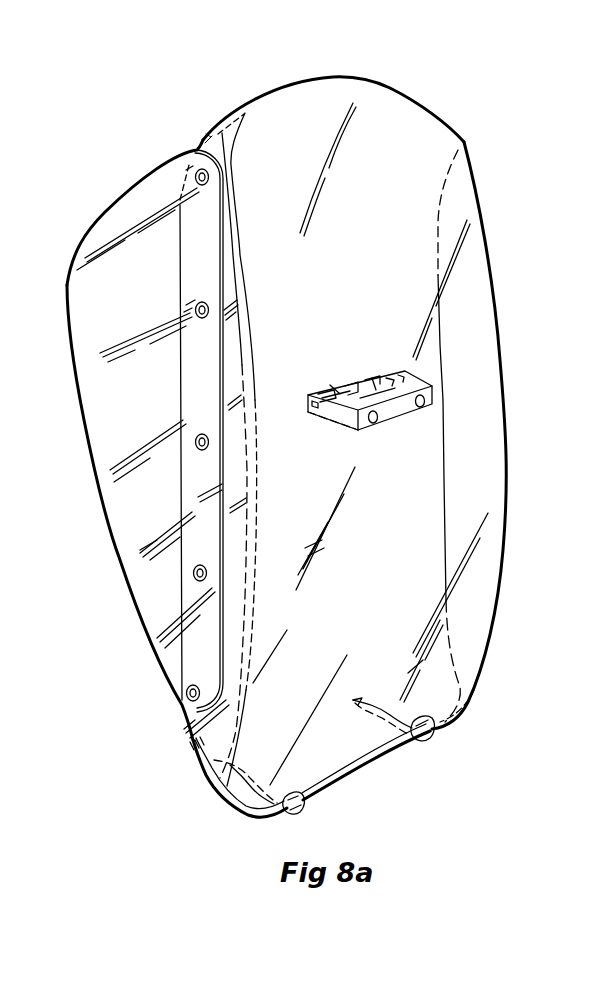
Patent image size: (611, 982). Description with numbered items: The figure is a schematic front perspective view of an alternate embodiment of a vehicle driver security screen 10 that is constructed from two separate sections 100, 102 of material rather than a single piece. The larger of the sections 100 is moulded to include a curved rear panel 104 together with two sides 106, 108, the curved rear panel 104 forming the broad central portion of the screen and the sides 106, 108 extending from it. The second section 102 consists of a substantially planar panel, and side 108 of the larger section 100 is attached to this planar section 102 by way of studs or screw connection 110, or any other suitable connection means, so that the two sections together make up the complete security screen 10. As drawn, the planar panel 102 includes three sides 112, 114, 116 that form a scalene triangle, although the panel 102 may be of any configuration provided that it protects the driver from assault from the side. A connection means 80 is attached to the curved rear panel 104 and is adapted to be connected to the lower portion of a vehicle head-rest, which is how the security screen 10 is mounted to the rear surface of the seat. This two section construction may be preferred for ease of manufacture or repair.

The security screen 10 is at (481, 138).
The connection means 80 is at (394, 415).
The larger section 100 is at (383, 103).
The section 102 is at (162, 398).
The curved rear panel 104 is at (370, 308).
The side 106 is at (480, 413).
The side 108 is at (205, 725).
The studs or screw connection 110 is at (197, 577).
The side 112 is at (213, 650).
The side 114 is at (103, 473).
The side 116 is at (122, 193).